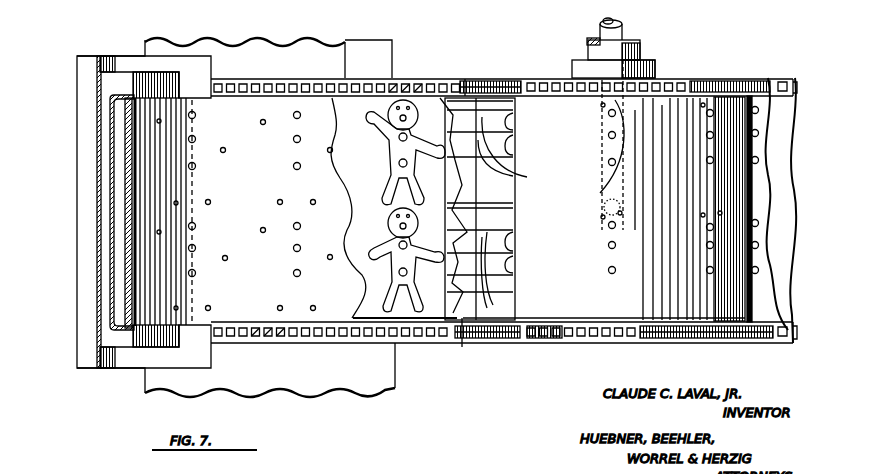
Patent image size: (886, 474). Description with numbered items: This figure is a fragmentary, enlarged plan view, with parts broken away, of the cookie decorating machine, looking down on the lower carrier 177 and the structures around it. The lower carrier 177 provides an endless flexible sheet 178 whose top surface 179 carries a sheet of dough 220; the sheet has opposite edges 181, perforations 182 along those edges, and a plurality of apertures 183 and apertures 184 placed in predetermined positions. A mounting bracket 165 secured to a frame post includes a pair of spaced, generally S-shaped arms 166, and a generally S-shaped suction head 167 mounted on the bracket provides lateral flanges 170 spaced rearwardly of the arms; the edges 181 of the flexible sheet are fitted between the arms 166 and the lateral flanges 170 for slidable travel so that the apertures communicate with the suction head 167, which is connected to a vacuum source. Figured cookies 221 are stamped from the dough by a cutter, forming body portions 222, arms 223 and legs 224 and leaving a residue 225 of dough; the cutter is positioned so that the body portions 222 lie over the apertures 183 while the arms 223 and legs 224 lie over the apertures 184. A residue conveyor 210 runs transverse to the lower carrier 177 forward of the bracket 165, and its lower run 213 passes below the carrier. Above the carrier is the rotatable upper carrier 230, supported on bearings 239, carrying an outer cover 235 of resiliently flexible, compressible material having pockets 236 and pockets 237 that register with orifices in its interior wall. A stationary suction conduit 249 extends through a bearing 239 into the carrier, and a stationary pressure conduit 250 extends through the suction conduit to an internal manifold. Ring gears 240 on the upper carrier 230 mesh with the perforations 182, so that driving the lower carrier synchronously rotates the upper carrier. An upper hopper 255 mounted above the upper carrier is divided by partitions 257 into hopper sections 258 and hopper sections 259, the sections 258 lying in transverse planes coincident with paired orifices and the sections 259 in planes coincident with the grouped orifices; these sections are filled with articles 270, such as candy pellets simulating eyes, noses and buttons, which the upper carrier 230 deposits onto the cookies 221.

The mounting bracket 165 is at (98, 178).
The S-shaped arms 166 is at (143, 87).
The suction head 167 is at (113, 138).
The lateral flanges 170 is at (124, 95).
The lower carrier 177 is at (377, 350).
The endless flexible sheet 178 is at (322, 343).
The top surface 179 is at (265, 208).
The opposite edges 181 is at (347, 44).
The perforations 182 is at (417, 86).
The apertures 183 is at (128, 273).
The apertures 184 is at (224, 152).
The residue conveyor 210 is at (363, 398).
The lower run 213 is at (295, 383).
The sheet of dough 220 is at (457, 343).
The figured cookies 221 is at (380, 146).
The body portions 222 is at (392, 160).
The arms 223 is at (380, 115).
The legs 224 is at (393, 200).
The residue 225 is at (443, 300).
The upper carrier 230 is at (762, 305).
The outer cover 235 is at (650, 302).
The pockets 236 is at (610, 158).
The pockets 237 is at (585, 72).
The bearings 239 is at (652, 60).
The ring gears 240 is at (525, 85).
The suction conduit 249 is at (630, 52).
The pressure conduit 250 is at (601, 36).
The upper hopper 255 is at (514, 288).
The partitions 257 is at (513, 140).
The hopper sections 258 is at (470, 100).
The hopper sections 259 is at (528, 178).
The articles 270 is at (612, 117).